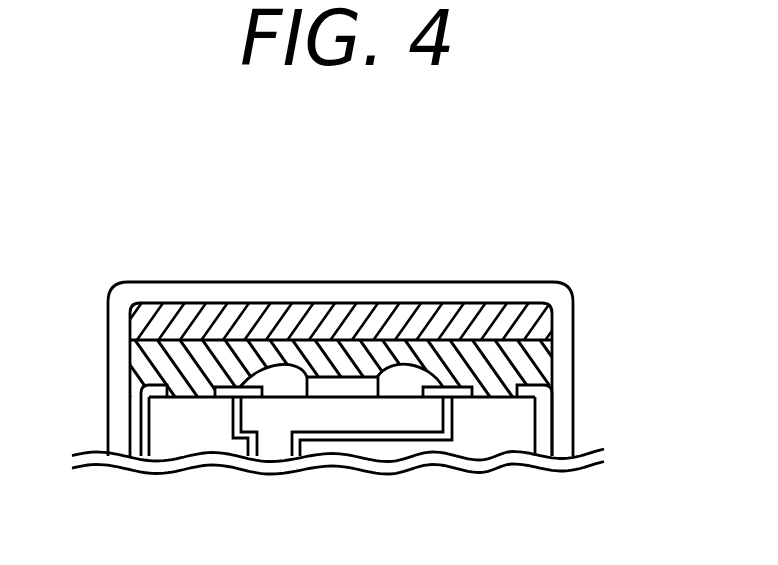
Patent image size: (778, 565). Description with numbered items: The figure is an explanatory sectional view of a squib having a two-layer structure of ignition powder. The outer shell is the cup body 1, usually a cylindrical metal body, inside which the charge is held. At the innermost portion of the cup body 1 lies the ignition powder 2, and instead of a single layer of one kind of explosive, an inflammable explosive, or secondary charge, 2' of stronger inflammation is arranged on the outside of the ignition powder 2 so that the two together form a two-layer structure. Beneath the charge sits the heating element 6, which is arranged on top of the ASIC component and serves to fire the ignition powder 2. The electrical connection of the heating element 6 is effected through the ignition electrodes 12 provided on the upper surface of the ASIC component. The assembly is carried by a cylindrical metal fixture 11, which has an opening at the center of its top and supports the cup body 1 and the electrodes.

The cup body 1 is at (340, 295).
The ignition powder 2 is at (368, 367).
The inflammable explosive (secondary charge) 2' is at (354, 255).
The heating element 6 is at (342, 280).
The cylindrical metal fixture 11 is at (409, 420).
The ignition electrodes 12 is at (373, 470).